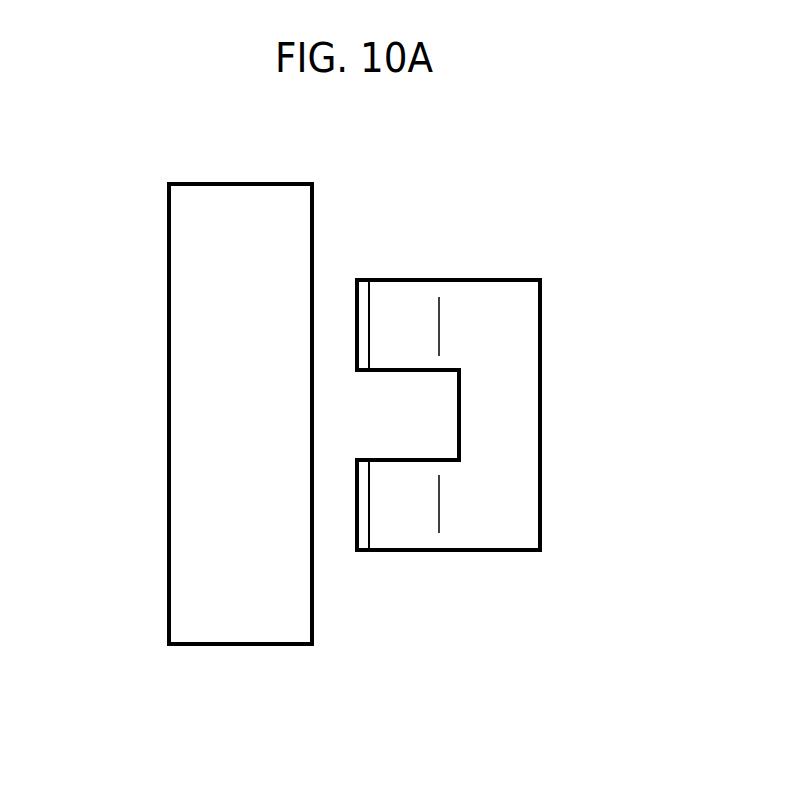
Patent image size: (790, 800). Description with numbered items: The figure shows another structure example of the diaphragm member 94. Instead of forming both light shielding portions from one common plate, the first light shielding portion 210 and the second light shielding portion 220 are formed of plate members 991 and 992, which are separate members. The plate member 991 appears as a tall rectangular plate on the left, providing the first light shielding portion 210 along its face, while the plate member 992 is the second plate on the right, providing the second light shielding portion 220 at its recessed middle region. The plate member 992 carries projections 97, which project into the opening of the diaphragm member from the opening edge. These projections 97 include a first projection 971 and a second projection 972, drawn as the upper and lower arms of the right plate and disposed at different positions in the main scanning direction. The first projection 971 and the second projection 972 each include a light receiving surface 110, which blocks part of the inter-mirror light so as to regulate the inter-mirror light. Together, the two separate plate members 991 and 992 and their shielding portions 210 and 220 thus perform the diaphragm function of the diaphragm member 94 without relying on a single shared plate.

The diaphragm member 94 is at (533, 168).
The plate member 991 is at (167, 455).
The plate member 992 is at (543, 517).
The first light shielding portion 210 is at (300, 410).
The second light shielding portion 220 is at (463, 418).
The light receiving surface 110 is at (400, 310).
The projections 97 is at (389, 411).
The first projection 971 is at (397, 552).
The second projection 972 is at (397, 278).